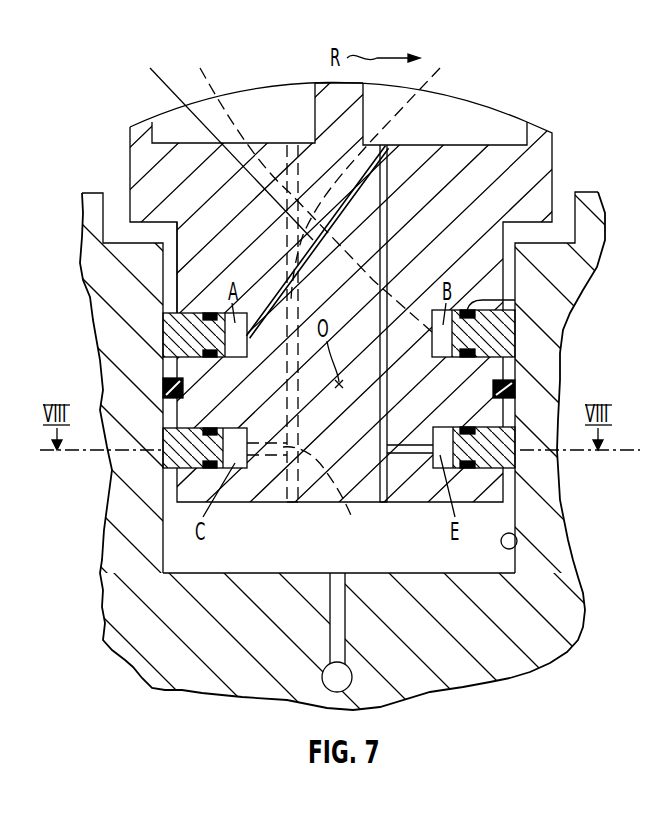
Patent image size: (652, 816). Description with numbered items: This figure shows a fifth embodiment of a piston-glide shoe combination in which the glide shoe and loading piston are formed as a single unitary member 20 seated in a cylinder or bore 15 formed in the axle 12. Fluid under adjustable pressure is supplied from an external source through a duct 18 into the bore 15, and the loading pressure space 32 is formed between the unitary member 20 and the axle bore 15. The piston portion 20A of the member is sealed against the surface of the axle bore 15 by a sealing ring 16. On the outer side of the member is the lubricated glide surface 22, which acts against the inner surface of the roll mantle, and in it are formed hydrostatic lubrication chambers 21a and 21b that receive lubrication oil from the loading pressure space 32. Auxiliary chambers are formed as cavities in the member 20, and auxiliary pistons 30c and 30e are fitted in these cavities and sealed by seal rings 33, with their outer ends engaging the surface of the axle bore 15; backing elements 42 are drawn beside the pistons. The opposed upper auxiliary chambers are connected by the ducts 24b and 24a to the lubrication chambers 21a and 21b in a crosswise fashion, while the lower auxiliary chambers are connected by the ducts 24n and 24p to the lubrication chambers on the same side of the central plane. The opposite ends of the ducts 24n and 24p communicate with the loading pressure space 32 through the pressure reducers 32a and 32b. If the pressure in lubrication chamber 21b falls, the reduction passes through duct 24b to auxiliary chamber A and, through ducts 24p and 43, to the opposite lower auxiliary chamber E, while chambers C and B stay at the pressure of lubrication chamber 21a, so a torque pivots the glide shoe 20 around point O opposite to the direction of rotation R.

The axle 12 is at (558, 608).
The axle bore 15 is at (514, 548).
The sealing ring 16 is at (170, 388).
The duct 18 is at (338, 641).
The unitary member 20 is at (540, 158).
The piston portion 20A is at (176, 270).
The hydrostatic lubrication chamber 21a is at (265, 100).
The hydrostatic lubrication chamber 21b is at (500, 123).
The glide surface 22 is at (528, 122).
The duct 24a is at (377, 172).
The duct 24b is at (220, 142).
The duct 24n is at (258, 518).
The duct 24p is at (387, 147).
The auxiliary piston 30c is at (195, 345).
The auxiliary piston 30e is at (500, 340).
The loading pressure space 32 is at (227, 562).
The pressure reducer 32a is at (292, 500).
The pressure reducer 32b is at (387, 500).
The seal ring 33 is at (513, 307).
The backup rings 42 is at (205, 332).
The duct 43 is at (393, 447).